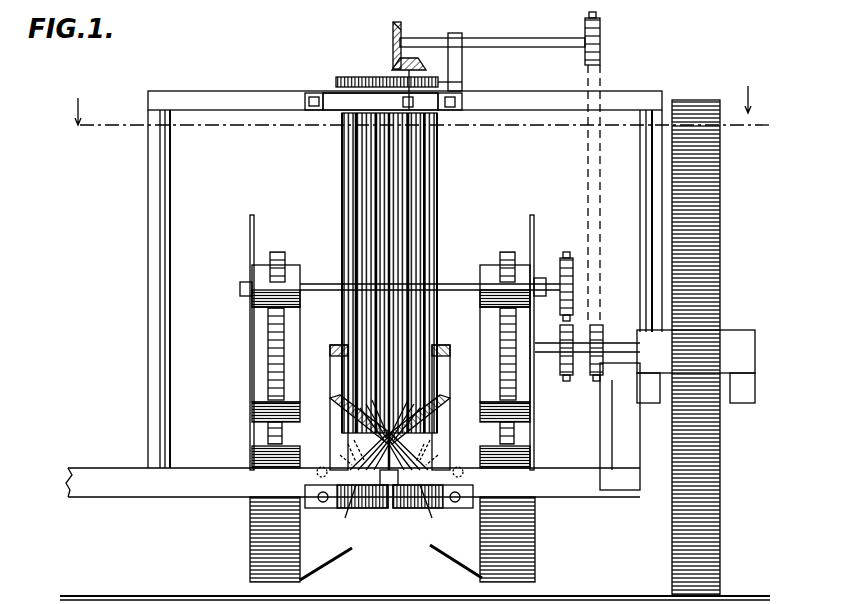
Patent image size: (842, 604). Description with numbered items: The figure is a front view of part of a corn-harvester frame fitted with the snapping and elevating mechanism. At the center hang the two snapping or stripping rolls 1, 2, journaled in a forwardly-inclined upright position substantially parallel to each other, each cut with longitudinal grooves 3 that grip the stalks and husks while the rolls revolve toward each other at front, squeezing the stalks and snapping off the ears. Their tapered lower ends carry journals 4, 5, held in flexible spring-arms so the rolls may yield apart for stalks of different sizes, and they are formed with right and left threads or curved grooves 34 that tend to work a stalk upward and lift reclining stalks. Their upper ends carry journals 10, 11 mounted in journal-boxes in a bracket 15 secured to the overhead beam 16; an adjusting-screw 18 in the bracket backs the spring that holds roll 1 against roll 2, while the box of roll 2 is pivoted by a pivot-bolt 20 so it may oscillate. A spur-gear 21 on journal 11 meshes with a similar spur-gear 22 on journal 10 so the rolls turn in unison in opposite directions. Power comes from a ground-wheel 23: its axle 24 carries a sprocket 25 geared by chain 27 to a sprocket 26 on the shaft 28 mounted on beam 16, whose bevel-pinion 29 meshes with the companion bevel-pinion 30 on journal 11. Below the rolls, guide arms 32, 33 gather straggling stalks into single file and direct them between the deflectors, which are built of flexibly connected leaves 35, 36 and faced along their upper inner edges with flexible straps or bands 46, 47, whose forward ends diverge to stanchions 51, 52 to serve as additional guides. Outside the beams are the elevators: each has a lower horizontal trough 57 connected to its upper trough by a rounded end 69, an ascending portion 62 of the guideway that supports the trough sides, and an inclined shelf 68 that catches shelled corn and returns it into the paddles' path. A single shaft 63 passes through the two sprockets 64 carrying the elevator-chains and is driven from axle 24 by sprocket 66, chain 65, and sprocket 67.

The snapping or stripping roll 1 is at (352, 193).
The snapping or stripping roll 2 is at (430, 204).
The longitudinal grooves 3 is at (460, 235).
The journal 4 is at (356, 500).
The journal 5 is at (440, 498).
The journal 10 is at (364, 94).
The journal 11 is at (408, 94).
The bracket 15 is at (332, 94).
The overhead beam 16 is at (243, 98).
The adjusting-screw 18 is at (310, 100).
The pivot-bolt 20 is at (413, 102).
The spur-gear 21 is at (440, 80).
The spur-gear 22 is at (364, 77).
The ground-wheel 23 is at (722, 498).
The axle 24 is at (612, 343).
The sprocket 25 is at (594, 382).
The sprocket 26 is at (602, 46).
The chain 27 is at (586, 178).
The shaft 28 is at (522, 48).
The bevel-pinion 29 is at (392, 35).
The bevel-pinion 30 is at (412, 60).
The guide plate or arm 32 is at (380, 508).
The guide plate or arm 33 is at (412, 508).
The right and left threads or curved grooves 34 is at (392, 462).
The deflector leaves 35 is at (352, 462).
The deflector leaves 36 is at (352, 451).
The strap or band 46 is at (345, 437).
The strap or band 47 is at (430, 430).
The stanchion 51 is at (332, 356).
The stanchion 52 is at (444, 370).
The lower trough 57 is at (316, 476).
The ascending portion 62 is at (283, 334).
The shaft 63 is at (452, 289).
The sprocket 64 is at (284, 248).
The chain 65 is at (506, 256).
The sprocket 66 is at (560, 268).
The sprocket 67 is at (572, 372).
The inclined shelf 68 is at (350, 556).
The rounded end 69 is at (258, 535).